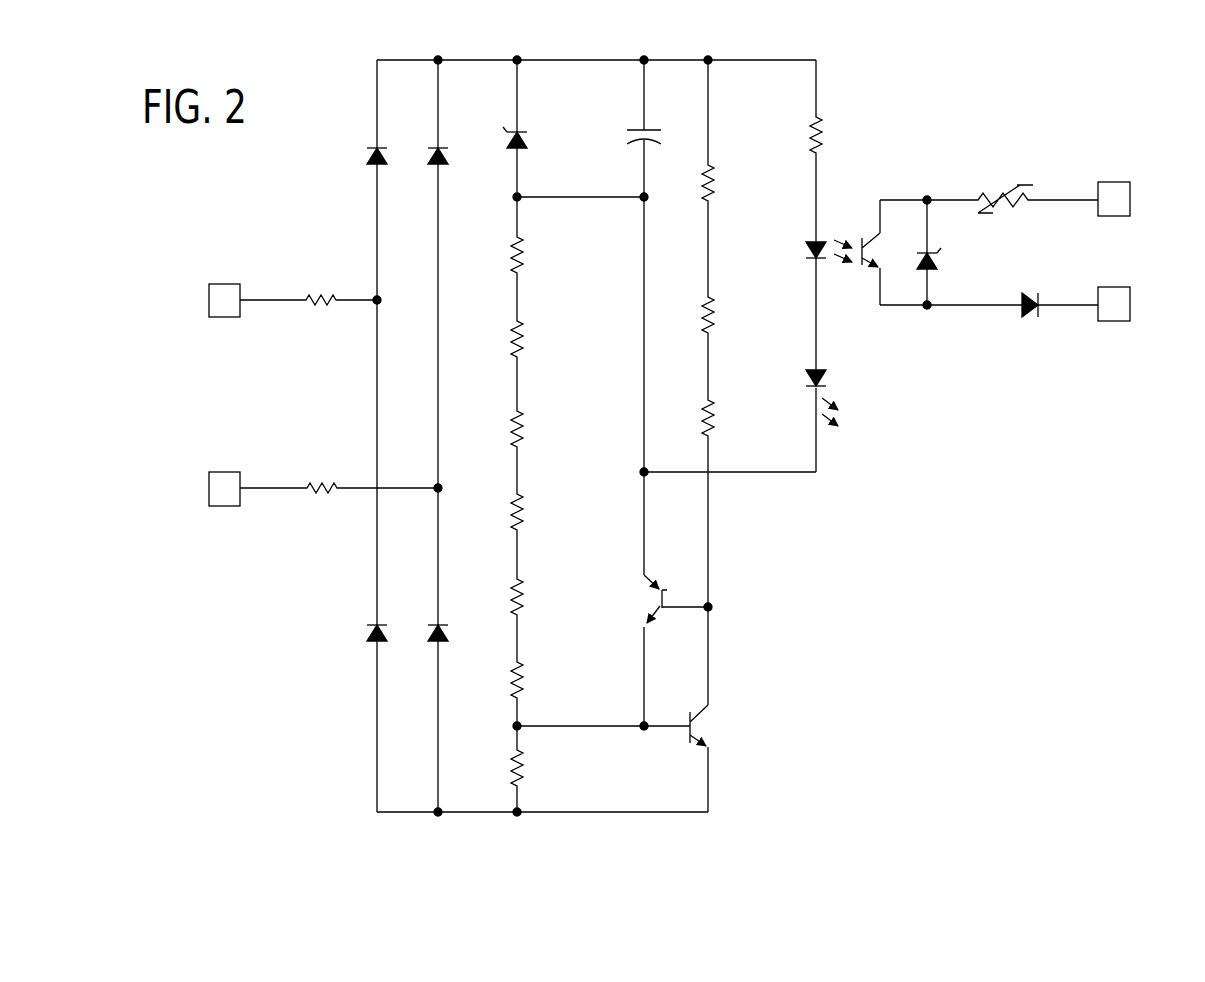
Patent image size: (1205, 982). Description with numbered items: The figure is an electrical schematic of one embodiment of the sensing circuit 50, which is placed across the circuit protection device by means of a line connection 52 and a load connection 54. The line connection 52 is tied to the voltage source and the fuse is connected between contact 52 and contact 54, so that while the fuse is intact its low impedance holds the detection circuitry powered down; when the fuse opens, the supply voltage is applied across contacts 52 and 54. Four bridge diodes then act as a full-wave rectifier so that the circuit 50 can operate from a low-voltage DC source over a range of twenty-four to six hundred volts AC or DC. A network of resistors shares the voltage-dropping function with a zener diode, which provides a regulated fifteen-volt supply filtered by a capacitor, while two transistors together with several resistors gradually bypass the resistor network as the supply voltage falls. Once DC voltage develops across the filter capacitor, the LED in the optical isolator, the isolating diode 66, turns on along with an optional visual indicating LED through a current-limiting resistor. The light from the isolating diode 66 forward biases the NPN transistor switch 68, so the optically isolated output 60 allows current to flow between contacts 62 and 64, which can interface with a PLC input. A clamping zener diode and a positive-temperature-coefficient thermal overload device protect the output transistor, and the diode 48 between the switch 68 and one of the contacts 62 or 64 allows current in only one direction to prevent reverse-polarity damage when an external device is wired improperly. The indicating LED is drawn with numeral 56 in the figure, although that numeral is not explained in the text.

The diode 48 is at (1031, 291).
The sensing circuit 50 is at (940, 70).
The line connection 52 is at (209, 300).
The load connection 54 is at (209, 488).
The LED D3 56 is at (804, 376).
The optically isolated output 60 is at (880, 333).
The contact 62 is at (1130, 200).
The contact 64 is at (1130, 305).
The isolating diode 66 is at (804, 246).
The switch 68 is at (858, 232).